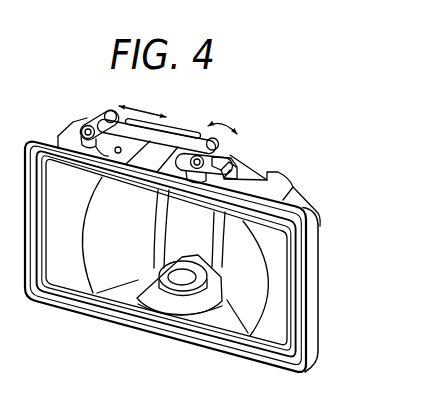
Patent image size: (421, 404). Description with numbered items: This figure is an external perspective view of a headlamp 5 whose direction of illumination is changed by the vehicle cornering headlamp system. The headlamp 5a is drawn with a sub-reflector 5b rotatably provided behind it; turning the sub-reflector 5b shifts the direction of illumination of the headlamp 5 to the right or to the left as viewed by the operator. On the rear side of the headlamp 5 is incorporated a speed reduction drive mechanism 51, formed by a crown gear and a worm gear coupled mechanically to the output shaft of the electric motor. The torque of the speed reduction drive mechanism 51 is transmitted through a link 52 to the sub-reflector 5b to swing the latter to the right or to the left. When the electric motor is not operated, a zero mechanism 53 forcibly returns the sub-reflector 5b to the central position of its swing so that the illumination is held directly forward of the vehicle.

The headlamp 5 is at (268, 152).
The headlamp 5a is at (183, 288).
The sub-reflector 5b is at (182, 238).
The speed reduction drive mechanism 51 is at (63, 141).
The link 52 is at (121, 112).
The zero mechanism 53 is at (237, 153).